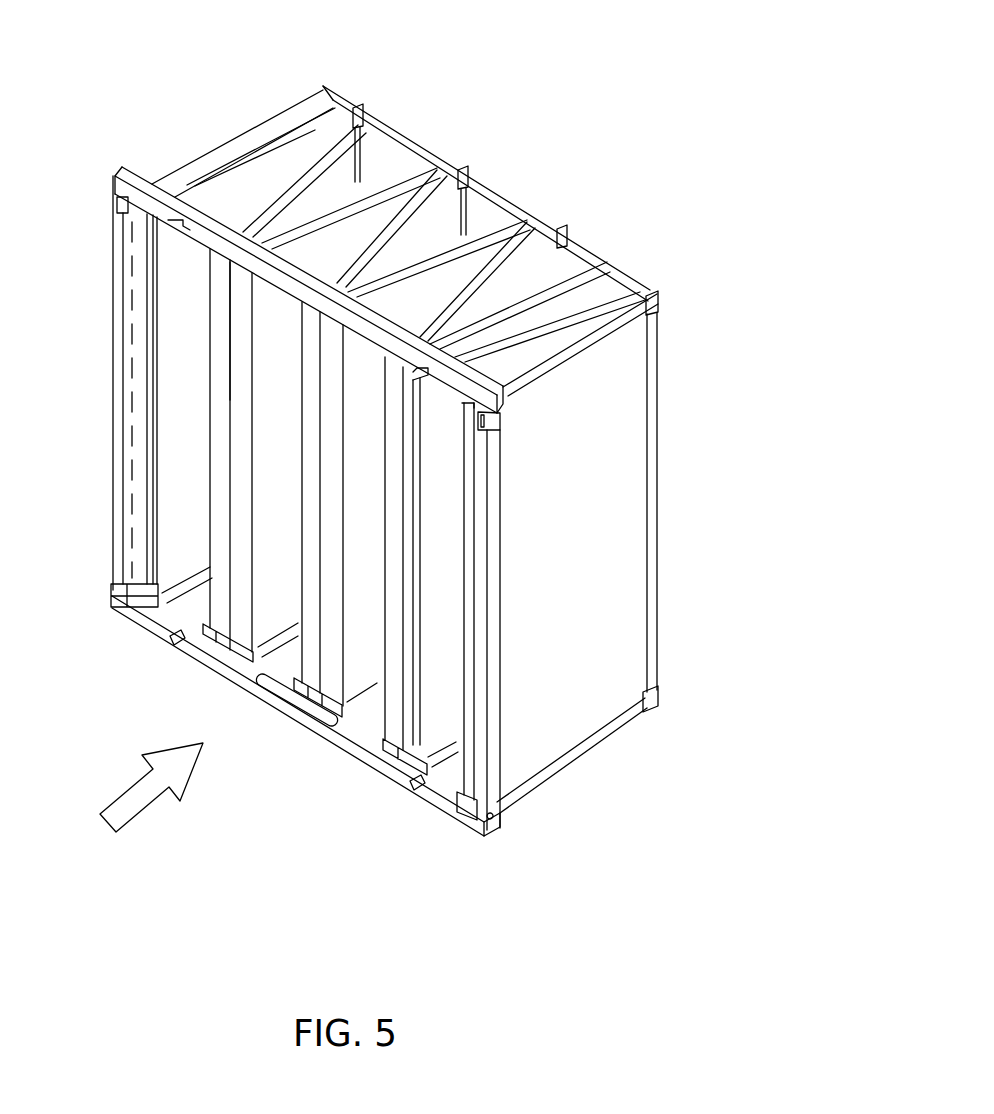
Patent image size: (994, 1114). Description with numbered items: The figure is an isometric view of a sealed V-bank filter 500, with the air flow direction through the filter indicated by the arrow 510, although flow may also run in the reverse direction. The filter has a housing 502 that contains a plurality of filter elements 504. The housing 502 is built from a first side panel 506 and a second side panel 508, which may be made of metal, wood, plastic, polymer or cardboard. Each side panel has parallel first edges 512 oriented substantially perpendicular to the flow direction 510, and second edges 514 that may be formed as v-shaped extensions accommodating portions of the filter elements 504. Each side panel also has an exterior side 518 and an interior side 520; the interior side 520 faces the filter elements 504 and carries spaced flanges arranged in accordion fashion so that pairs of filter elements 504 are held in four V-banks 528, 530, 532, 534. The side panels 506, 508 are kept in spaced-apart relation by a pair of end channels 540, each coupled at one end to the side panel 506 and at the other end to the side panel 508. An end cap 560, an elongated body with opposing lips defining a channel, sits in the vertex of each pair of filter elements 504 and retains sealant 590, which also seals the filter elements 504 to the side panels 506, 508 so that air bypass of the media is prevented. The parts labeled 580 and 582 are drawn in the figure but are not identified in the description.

The sealed V-bank filter 500 is at (567, 72).
The housing 502 is at (432, 231).
The filter elements 504 is at (622, 520).
The first side panel 506 is at (463, 827).
The second side panel 508 is at (632, 280).
The arrow 510 is at (133, 790).
The first edges 512 is at (283, 291).
The second edges 514 is at (443, 150).
The exterior side 518 is at (232, 148).
The interior side 520 is at (188, 605).
The V-bank 528 is at (447, 537).
The V-bank 530 is at (363, 537).
The V-bank 532 is at (263, 423).
The V-bank 534 is at (165, 366).
The end channel 540 is at (118, 276).
The end cap 560 is at (213, 512).
The latch bar 580 is at (257, 677).
The bracket 582 is at (390, 120).
The sealant 590 is at (175, 635).